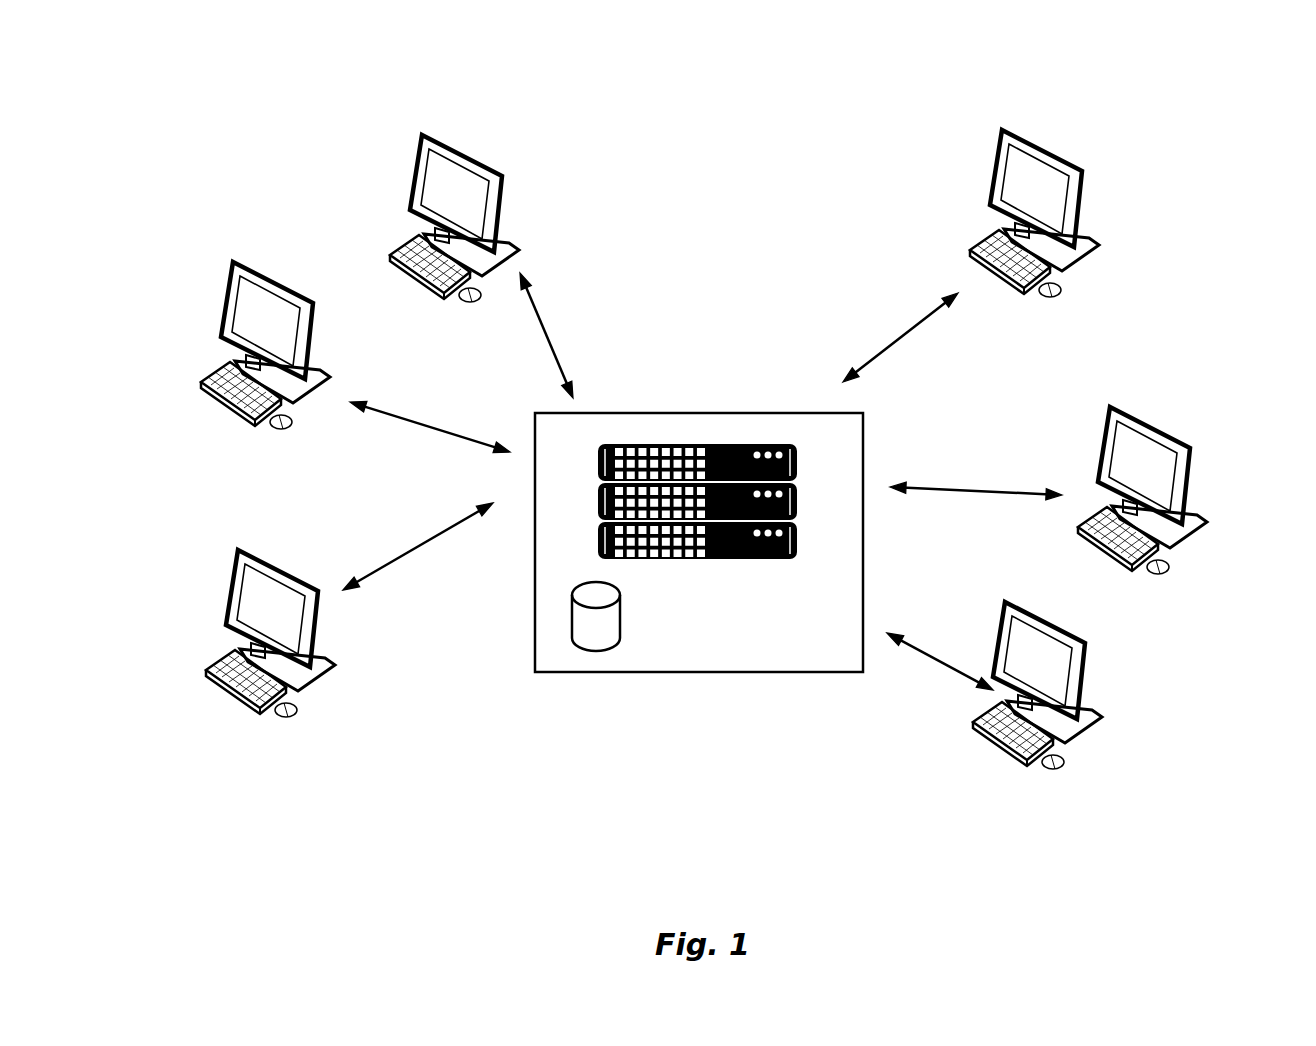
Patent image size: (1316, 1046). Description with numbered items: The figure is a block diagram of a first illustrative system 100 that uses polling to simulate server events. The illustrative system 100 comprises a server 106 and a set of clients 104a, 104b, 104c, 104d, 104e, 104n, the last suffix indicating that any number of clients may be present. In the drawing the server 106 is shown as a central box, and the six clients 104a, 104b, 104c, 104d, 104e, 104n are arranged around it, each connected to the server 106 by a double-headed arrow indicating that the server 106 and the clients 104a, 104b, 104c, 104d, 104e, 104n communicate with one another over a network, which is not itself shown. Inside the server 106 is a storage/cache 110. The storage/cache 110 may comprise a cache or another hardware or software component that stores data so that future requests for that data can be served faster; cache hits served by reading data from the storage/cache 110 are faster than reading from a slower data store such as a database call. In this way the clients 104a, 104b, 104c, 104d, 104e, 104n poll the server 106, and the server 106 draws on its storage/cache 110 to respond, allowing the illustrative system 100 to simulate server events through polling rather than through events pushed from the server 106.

The illustrative system 100 is at (1232, 84).
The client 104a is at (238, 550).
The client 104b is at (233, 263).
The client 104c is at (422, 136).
The client 104d is at (1002, 131).
The client 104e is at (1100, 410).
The client 104n is at (995, 632).
The server 106 is at (722, 413).
The storage/cache 110 is at (587, 637).